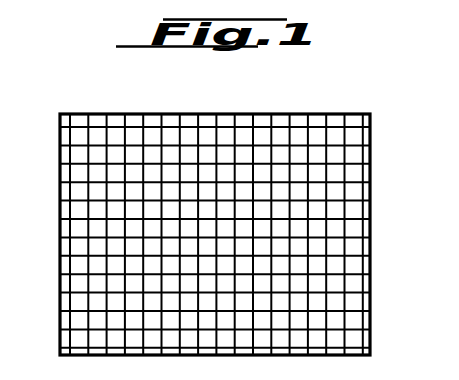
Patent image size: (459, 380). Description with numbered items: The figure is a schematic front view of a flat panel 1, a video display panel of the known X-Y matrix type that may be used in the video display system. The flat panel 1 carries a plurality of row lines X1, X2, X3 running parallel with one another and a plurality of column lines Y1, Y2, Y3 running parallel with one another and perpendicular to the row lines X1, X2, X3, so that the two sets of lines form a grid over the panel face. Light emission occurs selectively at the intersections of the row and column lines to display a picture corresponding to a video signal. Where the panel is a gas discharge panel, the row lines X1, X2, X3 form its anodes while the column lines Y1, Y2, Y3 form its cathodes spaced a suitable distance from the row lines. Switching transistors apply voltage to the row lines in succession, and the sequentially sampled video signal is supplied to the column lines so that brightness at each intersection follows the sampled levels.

The flat panel 1 is at (352, 133).
The row line X1 is at (191, 126).
The row line X2 is at (226, 142).
The row line X3 is at (261, 162).
The column line Y1 is at (66, 168).
The column line Y2 is at (87, 204).
The column line Y3 is at (108, 222).